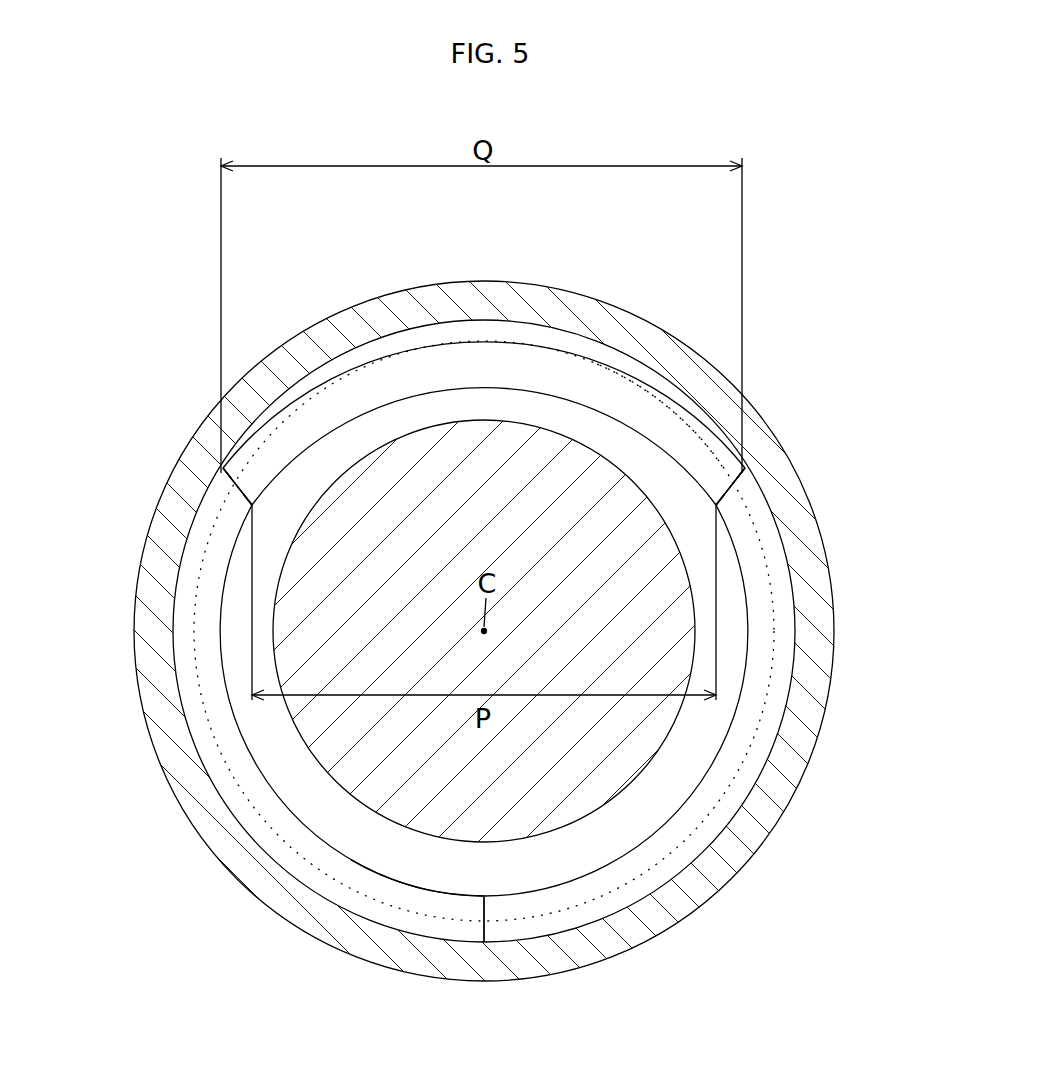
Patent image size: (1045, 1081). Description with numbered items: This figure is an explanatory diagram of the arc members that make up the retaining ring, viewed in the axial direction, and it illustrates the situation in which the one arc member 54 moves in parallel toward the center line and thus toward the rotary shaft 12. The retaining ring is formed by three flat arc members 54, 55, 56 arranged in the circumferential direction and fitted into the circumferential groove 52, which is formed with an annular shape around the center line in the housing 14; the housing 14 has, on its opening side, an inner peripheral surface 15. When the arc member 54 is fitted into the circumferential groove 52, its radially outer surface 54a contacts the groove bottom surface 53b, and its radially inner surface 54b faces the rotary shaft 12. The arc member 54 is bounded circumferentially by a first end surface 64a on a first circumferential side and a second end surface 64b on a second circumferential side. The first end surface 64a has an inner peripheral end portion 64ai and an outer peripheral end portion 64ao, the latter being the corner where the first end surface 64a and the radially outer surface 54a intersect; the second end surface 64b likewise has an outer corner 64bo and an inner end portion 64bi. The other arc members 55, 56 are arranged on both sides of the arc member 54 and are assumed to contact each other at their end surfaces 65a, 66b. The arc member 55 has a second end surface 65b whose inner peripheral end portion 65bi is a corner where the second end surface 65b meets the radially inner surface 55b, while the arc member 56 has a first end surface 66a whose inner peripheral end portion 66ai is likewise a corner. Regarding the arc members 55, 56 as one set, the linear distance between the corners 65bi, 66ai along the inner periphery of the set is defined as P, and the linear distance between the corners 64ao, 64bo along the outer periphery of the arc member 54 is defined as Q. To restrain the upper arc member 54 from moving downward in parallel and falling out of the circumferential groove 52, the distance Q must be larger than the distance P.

The rotary shaft 12 is at (677, 727).
The housing 14 is at (590, 290).
The inner peripheral surface 15 is at (632, 890).
The circumferential groove 52 is at (700, 437).
The groove bottom surface 53b is at (522, 318).
The arc member 54 is at (484, 361).
The radially outer surface 54a is at (397, 350).
The radially inner surface 54b is at (453, 392).
The arc member 55 is at (369, 651).
The radially inner surface 55b is at (372, 870).
The arc member 56 is at (668, 659).
The first end surface 64a is at (226, 531).
The outer peripheral end portion 64ao is at (220, 470).
The inner peripheral end portion 64ai is at (255, 507).
The second end surface 64b is at (761, 491).
The outer peripheral end portion 64bo is at (747, 470).
The inner end of right end face 64bi is at (714, 507).
The end surface 65a is at (487, 915).
The second end surface 65b is at (254, 470).
The inner peripheral end portion 65bi is at (258, 510).
The first end surface 66a is at (712, 470).
The inner peripheral end portion 66ai is at (720, 508).
The end surface 66b is at (481, 940).